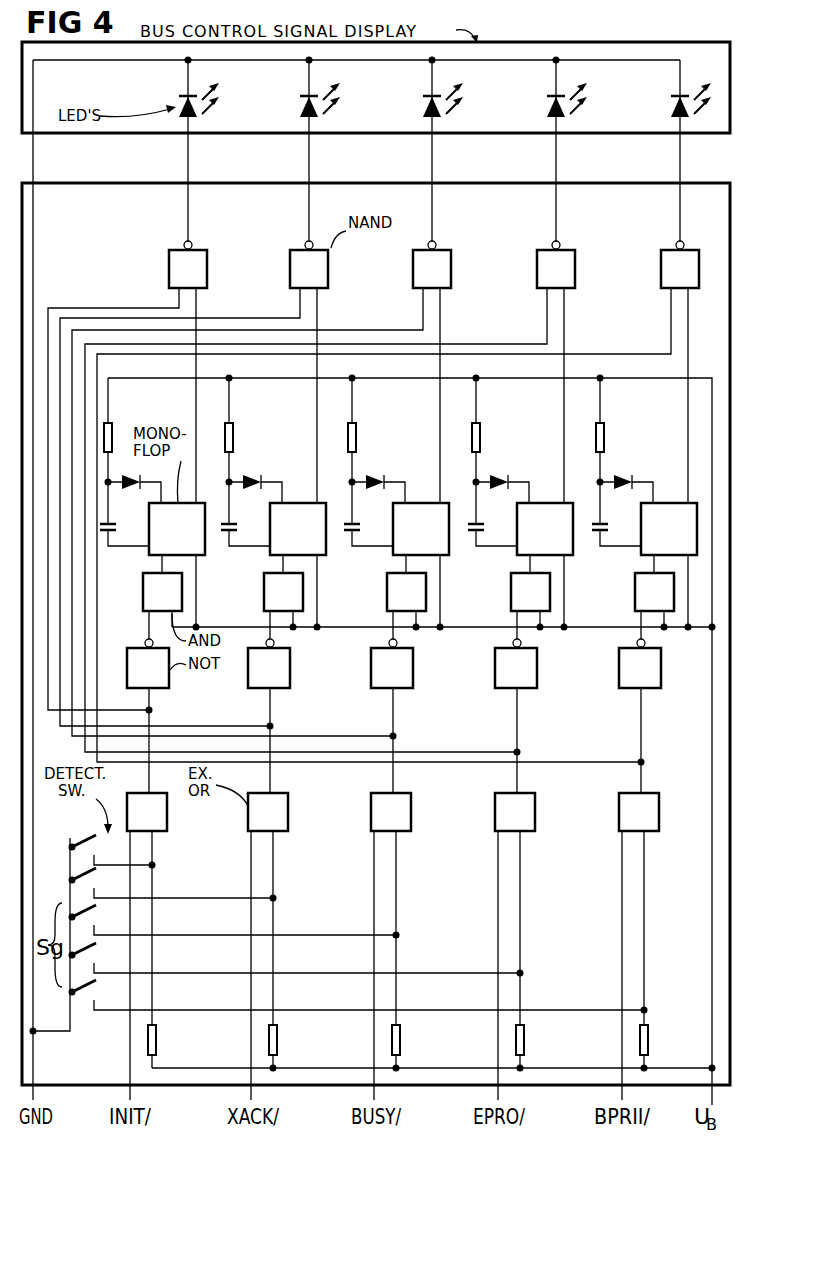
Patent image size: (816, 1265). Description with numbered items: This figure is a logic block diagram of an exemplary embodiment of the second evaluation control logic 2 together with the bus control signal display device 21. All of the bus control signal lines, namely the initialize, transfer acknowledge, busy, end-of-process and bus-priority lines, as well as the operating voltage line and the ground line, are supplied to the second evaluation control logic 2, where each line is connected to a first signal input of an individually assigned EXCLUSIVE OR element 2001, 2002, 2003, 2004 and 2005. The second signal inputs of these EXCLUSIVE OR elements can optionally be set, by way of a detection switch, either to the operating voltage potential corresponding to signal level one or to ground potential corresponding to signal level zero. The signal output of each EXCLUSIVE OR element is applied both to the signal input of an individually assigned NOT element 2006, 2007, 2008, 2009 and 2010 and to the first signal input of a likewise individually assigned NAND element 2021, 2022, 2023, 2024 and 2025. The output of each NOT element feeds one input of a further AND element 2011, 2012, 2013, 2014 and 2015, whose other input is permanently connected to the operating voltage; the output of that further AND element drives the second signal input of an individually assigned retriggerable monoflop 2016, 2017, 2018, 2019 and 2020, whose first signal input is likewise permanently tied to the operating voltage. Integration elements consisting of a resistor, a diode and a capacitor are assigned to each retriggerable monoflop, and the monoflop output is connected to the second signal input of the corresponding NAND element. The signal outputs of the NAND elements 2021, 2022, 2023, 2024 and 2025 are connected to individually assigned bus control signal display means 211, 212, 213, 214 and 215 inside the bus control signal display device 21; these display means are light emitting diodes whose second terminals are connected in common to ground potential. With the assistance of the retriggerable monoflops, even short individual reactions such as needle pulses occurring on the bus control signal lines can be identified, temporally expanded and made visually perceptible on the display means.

The second evaluation control logic 2 is at (705, 190).
The bus control signal display device 21 is at (679, 46).
The bus control signal display means 211 is at (177, 108).
The bus control signal display means 212 is at (300, 96).
The bus control signal display means 213 is at (423, 96).
The bus control signal display means 214 is at (547, 96).
The bus control signal display means 215 is at (671, 96).
The EXCLUSIVE OR element 2001 is at (163, 818).
The EXCLUSIVE OR element 2002 is at (294, 824).
The EXCLUSIVE OR element 2003 is at (417, 824).
The EXCLUSIVE OR element 2004 is at (541, 824).
The EXCLUSIVE OR element 2005 is at (665, 824).
The NOT element 2006 is at (163, 682).
The NOT element 2007 is at (291, 673).
The NOT element 2008 is at (414, 673).
The NOT element 2009 is at (538, 673).
The NOT element 2010 is at (662, 673).
The further AND element 2011 is at (143, 598).
The further AND element 2012 is at (256, 601).
The further AND element 2013 is at (379, 601).
The further AND element 2014 is at (503, 601).
The further AND element 2015 is at (627, 601).
The retriggerable monoflop 2016 is at (160, 552).
The retriggerable monoflop 2017 is at (273, 541).
The retriggerable monoflop 2018 is at (396, 541).
The retriggerable monoflop 2019 is at (520, 541).
The retriggerable monoflop 2020 is at (644, 541).
The NAND element 2021 is at (203, 268).
The NAND element 2022 is at (334, 264).
The NAND element 2023 is at (457, 264).
The NAND element 2024 is at (581, 264).
The NAND element 2025 is at (655, 279).